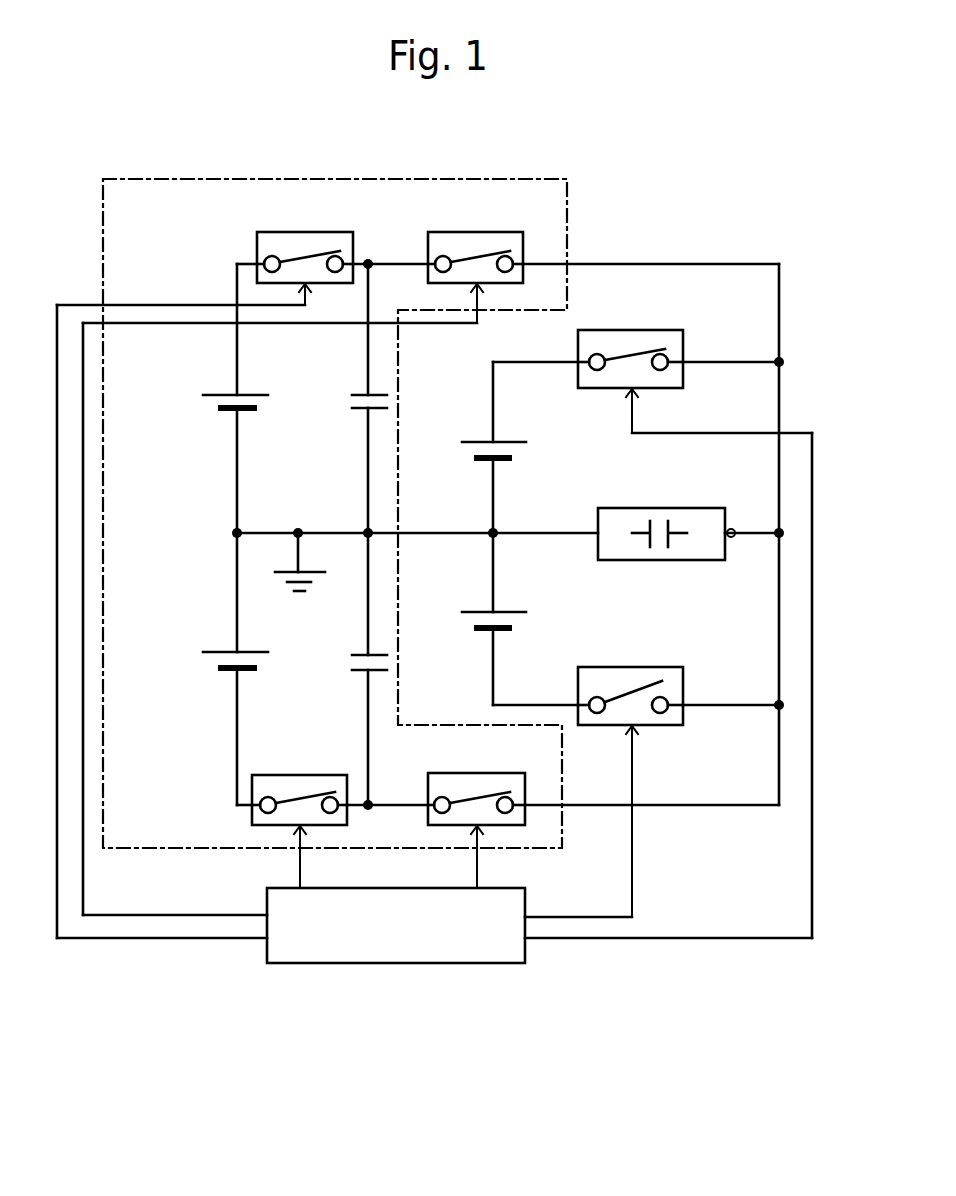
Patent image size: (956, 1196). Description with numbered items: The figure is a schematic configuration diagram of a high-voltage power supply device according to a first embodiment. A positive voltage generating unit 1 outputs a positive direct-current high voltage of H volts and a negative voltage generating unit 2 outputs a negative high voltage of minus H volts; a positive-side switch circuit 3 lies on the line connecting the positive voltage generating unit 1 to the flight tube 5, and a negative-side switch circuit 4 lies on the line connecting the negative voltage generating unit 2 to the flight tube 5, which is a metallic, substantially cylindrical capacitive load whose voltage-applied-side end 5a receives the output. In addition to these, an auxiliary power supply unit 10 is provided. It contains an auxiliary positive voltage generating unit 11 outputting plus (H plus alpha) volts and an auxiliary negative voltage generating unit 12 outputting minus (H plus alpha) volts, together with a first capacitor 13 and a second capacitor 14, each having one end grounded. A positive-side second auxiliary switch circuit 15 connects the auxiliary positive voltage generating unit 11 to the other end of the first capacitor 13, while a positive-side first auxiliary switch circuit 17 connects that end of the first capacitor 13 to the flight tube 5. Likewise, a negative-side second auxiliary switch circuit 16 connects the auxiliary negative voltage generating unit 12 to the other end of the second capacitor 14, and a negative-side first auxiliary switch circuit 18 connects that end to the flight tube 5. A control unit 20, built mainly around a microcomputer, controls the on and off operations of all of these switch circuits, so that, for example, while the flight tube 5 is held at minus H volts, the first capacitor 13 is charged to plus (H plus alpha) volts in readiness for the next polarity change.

The positive voltage generating unit 1 is at (478, 452).
The negative voltage generating unit 2 is at (478, 610).
The positive-side switch circuit 3 is at (640, 329).
The negative-side switch circuit 4 is at (648, 665).
The flight tube 5 is at (677, 507).
The voltage-applied-side end 5a is at (733, 527).
The auxiliary power supply unit 10 is at (567, 203).
The auxiliary positive voltage generating unit 11 is at (220, 404).
The auxiliary negative voltage generating unit 12 is at (218, 650).
The first capacitor 13 is at (358, 392).
The second capacitor 14 is at (358, 652).
The positive-side second auxiliary switch circuit 15 is at (311, 231).
The negative-side second auxiliary switch circuit 16 is at (301, 774).
The positive-side first auxiliary switch circuit 17 is at (483, 231).
The negative-side first auxiliary switch circuit 18 is at (482, 772).
The control unit 20 is at (438, 966).